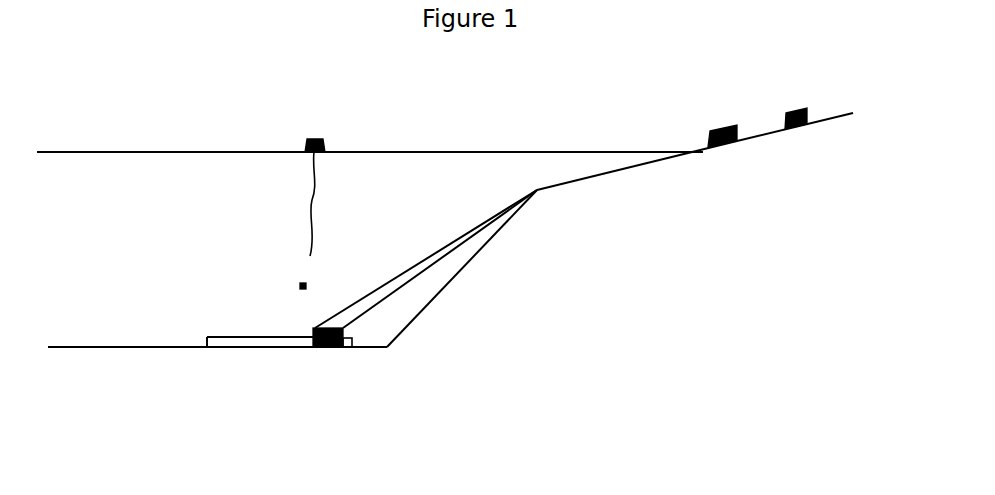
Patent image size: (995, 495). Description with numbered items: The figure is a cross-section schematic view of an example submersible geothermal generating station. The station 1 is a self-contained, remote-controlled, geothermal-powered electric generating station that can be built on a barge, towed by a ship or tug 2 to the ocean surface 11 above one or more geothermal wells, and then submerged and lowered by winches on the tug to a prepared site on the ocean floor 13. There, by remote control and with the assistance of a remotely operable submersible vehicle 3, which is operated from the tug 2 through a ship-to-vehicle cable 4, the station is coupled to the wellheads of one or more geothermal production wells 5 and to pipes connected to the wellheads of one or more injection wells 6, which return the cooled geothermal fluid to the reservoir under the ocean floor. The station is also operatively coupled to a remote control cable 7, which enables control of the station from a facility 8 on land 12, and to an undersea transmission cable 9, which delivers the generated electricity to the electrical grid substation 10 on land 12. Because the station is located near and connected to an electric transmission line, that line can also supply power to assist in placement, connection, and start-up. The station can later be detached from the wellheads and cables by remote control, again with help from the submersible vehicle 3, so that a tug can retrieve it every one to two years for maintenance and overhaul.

The station 1 is at (327, 357).
The tug 2 is at (315, 129).
The remotely operable submersible vehicle 3 is at (292, 289).
The ship-to-vehicle cable 4 is at (299, 204).
The production wells 5 is at (351, 350).
The injection wells 6 is at (207, 352).
The remote control cable 7 is at (397, 300).
The facility 8 is at (790, 105).
The undersea transmission cable 9 is at (405, 265).
The electrical grid substation 10 is at (716, 123).
The ocean surface 11 is at (370, 133).
The land 12 is at (798, 112).
The ocean floor 13 is at (356, 282).